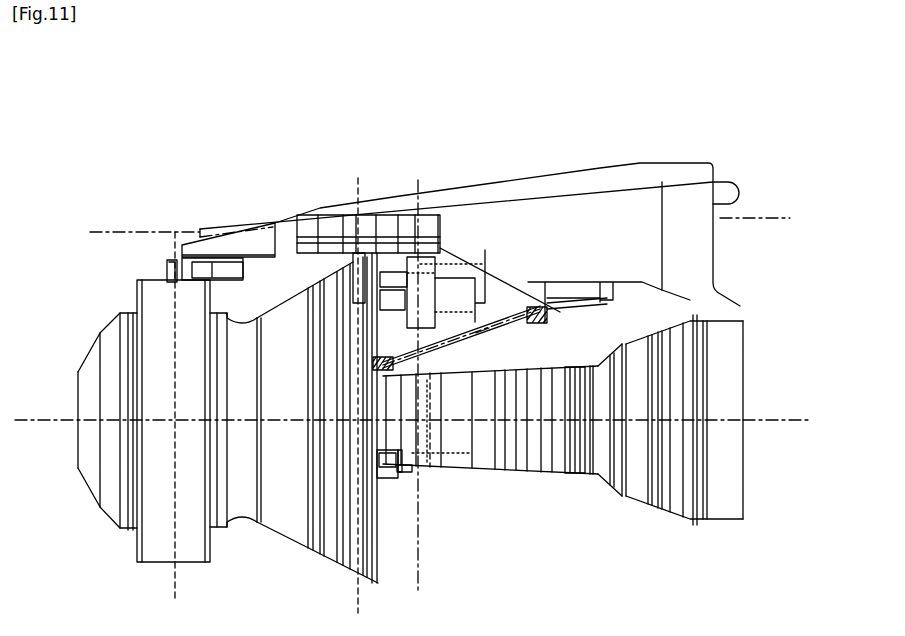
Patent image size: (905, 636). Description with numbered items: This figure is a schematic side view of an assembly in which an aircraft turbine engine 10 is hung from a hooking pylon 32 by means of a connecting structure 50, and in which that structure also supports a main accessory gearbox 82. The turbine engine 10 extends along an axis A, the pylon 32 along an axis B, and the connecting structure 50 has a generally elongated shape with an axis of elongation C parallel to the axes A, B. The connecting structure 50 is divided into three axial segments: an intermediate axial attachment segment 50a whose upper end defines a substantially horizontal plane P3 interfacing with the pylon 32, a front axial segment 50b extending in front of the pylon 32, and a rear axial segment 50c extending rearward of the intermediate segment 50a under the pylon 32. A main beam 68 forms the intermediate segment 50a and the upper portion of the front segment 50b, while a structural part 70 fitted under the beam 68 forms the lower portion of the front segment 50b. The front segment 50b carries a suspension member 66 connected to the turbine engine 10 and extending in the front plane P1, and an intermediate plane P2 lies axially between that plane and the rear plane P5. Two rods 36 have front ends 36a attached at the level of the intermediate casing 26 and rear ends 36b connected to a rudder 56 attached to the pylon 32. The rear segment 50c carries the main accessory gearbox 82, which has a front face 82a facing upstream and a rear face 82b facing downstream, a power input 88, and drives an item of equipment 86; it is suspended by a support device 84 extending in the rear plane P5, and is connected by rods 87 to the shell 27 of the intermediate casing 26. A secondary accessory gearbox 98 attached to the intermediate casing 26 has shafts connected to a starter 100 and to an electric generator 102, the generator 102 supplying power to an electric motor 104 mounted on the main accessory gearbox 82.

The turbine engine 10 is at (634, 527).
The intermediate casing 26 is at (317, 434).
The shell 27 is at (328, 544).
The pylon 32 is at (662, 160).
The rods 36 is at (525, 325).
The front ends 36a is at (438, 340).
The rear ends 36b is at (562, 317).
The connecting structure 50 is at (346, 190).
The intermediate axial attachment segment 50a is at (300, 180).
The front axial segment 50b is at (290, 203).
The rear axial segment 50c is at (393, 180).
The rudder 56 is at (610, 298).
The suspension member 66 is at (165, 255).
The main beam 68 is at (297, 257).
The structural part 70 is at (231, 268).
The main accessory gearbox 82 is at (460, 292).
The front face 82a is at (391, 350).
The rear face 82b is at (481, 335).
The support device 84 is at (440, 250).
The item of equipment 86 is at (470, 325).
The rods 87 is at (372, 318).
The power input 88 is at (380, 255).
The secondary accessory gearbox 98 is at (387, 488).
The starter 100 is at (405, 480).
The electric generator 102 is at (415, 470).
The electric motor 104 is at (527, 279).
The axis of the turbine engine A is at (800, 428).
The axis of the pylon B is at (762, 216).
The axis of elongation C is at (95, 222).
The front plane P1 is at (180, 595).
The intermediate plane P2 is at (362, 605).
The horizontal plane P3 is at (338, 195).
The rear plane P5 is at (421, 560).